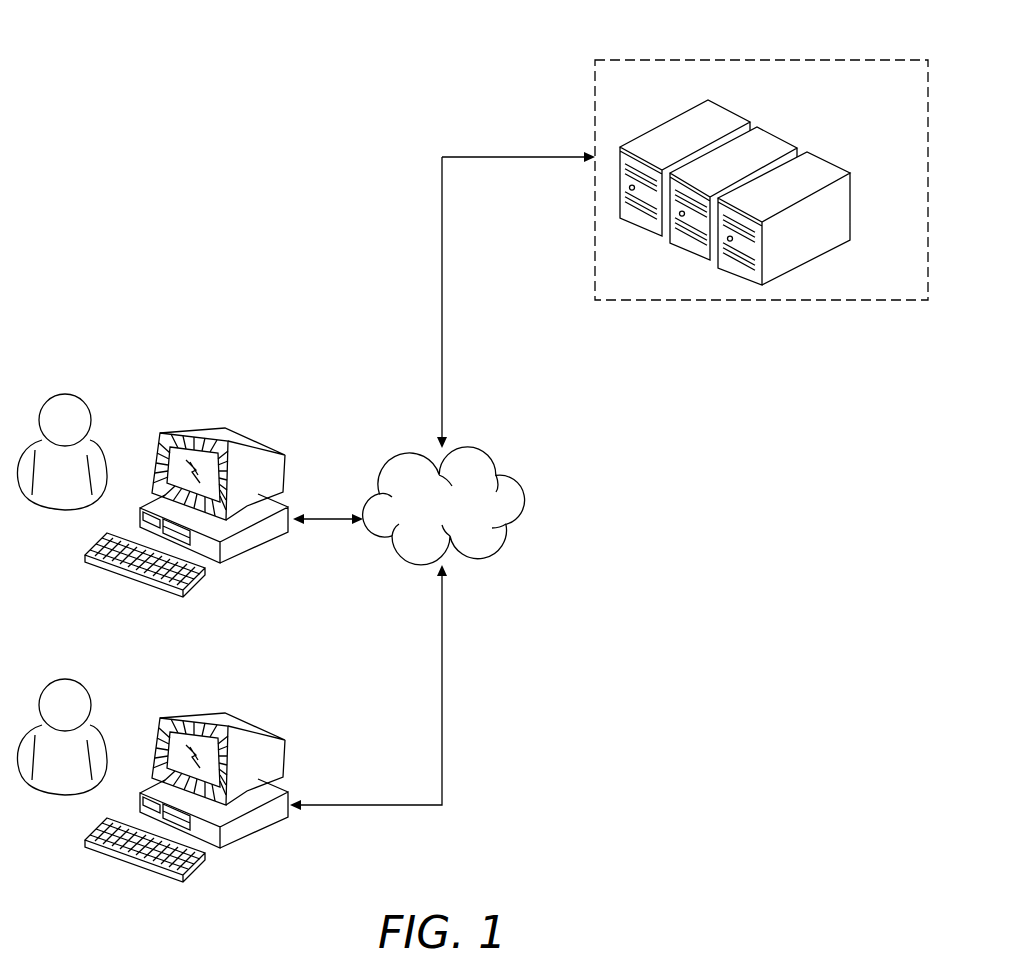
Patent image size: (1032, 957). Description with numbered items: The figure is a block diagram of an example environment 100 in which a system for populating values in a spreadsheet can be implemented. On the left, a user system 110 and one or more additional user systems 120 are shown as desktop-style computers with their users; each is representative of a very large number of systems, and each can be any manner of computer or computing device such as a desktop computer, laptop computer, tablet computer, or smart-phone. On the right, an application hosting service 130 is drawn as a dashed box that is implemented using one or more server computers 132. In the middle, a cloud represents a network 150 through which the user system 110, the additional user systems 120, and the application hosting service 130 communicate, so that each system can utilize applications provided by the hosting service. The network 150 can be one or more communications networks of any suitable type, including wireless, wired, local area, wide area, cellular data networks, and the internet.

The environment 100 is at (245, 48).
The user system 110 is at (255, 453).
The additional user system 120 is at (250, 738).
The application hosting service 130 is at (790, 60).
The server computer 132 is at (667, 122).
The network 150 is at (488, 452).